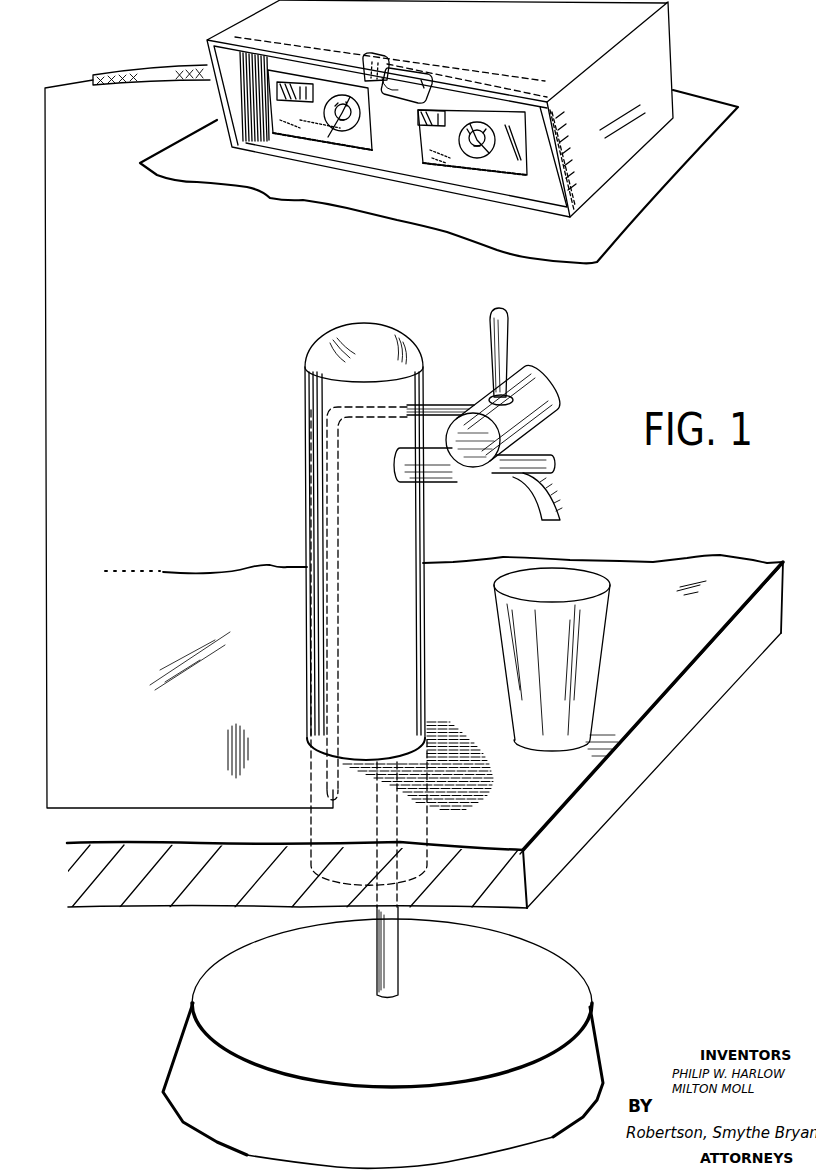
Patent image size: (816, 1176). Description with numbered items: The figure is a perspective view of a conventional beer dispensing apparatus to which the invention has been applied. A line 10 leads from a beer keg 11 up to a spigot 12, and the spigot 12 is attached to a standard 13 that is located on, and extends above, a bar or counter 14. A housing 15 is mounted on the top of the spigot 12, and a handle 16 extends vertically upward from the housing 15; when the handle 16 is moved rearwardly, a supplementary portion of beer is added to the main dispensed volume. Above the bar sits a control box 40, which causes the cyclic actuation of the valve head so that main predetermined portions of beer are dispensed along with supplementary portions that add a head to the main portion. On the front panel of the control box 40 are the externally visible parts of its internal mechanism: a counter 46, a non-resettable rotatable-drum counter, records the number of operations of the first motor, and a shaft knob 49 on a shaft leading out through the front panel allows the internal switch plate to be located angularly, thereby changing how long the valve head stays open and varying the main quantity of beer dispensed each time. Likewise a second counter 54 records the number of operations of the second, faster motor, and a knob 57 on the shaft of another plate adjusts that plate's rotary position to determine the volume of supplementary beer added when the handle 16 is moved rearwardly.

The line 10 is at (392, 962).
The beer keg 11 is at (582, 1055).
The spigot 12 is at (522, 477).
The standard 13 is at (380, 545).
The bar or counter 14 is at (650, 583).
The housing 15 is at (542, 415).
The handle 16 is at (495, 330).
The control box 40 is at (478, 40).
The counter 46 is at (292, 78).
The shaft knob 49 is at (355, 127).
The counter 54 is at (419, 124).
The knob 57 is at (477, 152).